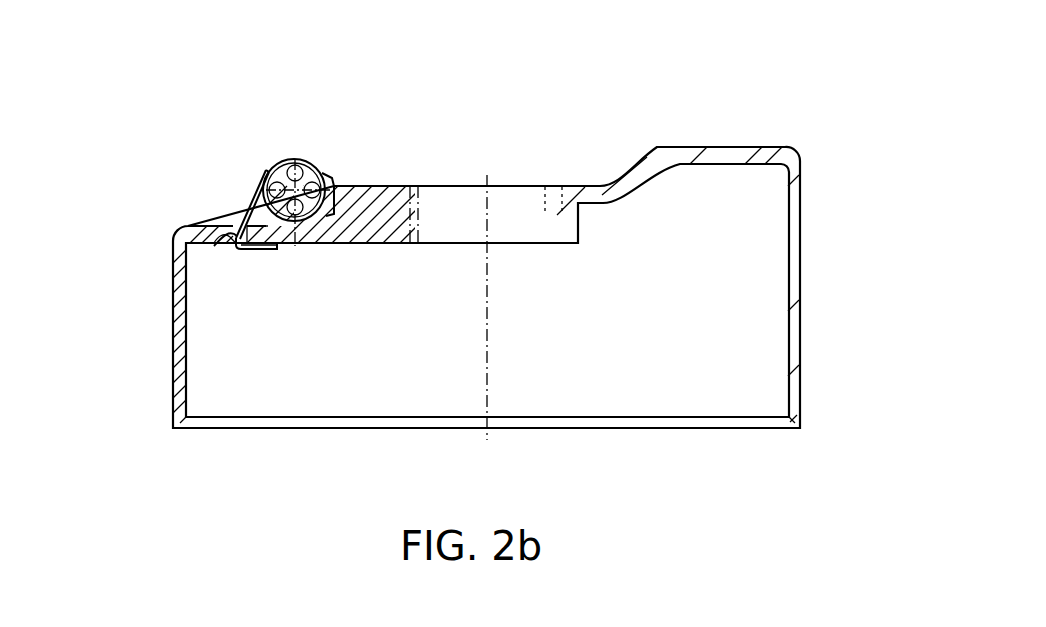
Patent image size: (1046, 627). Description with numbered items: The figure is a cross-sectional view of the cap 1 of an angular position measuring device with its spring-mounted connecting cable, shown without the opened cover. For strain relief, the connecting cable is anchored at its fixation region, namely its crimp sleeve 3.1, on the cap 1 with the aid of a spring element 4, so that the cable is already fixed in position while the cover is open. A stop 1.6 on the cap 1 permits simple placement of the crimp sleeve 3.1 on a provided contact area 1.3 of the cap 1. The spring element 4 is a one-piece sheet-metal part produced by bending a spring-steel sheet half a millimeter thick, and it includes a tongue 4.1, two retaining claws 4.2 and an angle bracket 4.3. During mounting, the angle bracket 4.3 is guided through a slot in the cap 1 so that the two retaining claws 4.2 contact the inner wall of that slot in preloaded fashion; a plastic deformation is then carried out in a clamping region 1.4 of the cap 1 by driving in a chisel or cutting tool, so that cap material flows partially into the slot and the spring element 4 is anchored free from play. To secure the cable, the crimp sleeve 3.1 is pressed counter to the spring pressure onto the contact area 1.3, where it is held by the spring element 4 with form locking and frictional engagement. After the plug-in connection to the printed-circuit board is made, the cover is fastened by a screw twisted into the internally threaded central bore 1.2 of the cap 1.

The cap 1 is at (797, 327).
The central bore 1.2 is at (515, 202).
The contact area 1.3 is at (332, 225).
The clamping region 1.4 is at (226, 254).
The stop 1.6 is at (333, 178).
The crimp sleeve 3.1 is at (318, 168).
The spring element 4 is at (248, 148).
The tongue 4.1 is at (240, 185).
The retaining claws 4.2 is at (228, 212).
The angle bracket 4.3 is at (262, 249).